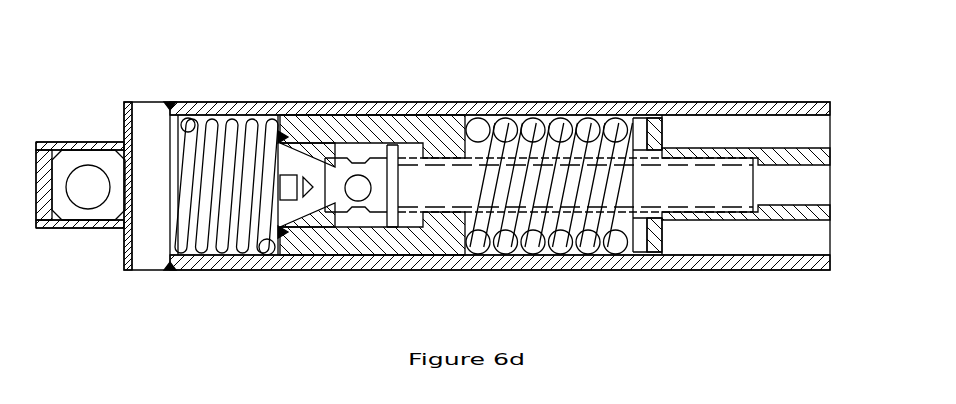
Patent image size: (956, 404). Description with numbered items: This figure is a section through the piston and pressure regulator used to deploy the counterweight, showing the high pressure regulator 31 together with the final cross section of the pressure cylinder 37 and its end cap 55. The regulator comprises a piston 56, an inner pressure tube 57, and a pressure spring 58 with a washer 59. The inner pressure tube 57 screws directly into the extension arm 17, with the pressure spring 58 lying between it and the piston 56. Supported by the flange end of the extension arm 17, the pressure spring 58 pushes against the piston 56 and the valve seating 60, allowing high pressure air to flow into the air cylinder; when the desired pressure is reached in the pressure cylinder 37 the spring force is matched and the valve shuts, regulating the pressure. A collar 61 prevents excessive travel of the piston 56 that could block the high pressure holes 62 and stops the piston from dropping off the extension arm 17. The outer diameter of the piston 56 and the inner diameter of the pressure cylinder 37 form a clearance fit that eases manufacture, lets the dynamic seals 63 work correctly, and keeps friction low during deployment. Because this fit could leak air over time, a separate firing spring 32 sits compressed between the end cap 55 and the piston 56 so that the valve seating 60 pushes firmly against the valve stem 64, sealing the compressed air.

The extension arm 17 is at (808, 153).
The high pressure regulator 31 is at (460, 52).
The firing spring 32 is at (170, 270).
The pressure cylinder 37 is at (812, 110).
The end cap 55 is at (148, 120).
The piston 56 is at (396, 119).
The inner pressure tube 57 is at (432, 180).
The pressure spring 58 is at (560, 127).
The washer 59 is at (642, 120).
The valve seating 60 is at (282, 134).
The collar 61 is at (412, 228).
The high pressure holes 62 is at (300, 213).
The dynamic seals 63 is at (328, 258).
The valve stem 64 is at (358, 188).